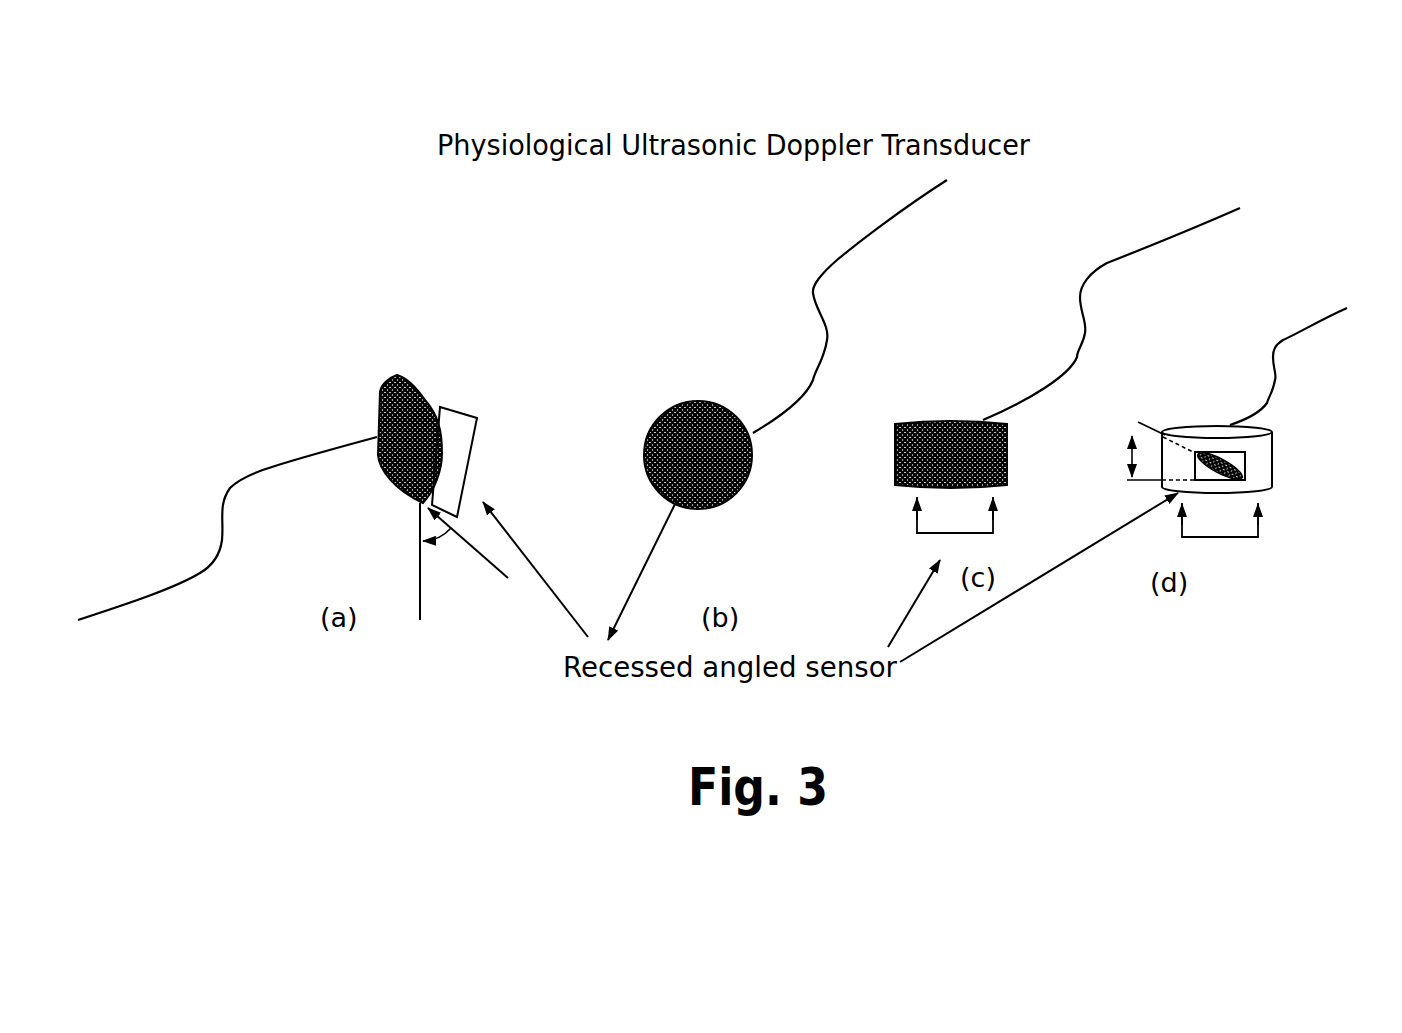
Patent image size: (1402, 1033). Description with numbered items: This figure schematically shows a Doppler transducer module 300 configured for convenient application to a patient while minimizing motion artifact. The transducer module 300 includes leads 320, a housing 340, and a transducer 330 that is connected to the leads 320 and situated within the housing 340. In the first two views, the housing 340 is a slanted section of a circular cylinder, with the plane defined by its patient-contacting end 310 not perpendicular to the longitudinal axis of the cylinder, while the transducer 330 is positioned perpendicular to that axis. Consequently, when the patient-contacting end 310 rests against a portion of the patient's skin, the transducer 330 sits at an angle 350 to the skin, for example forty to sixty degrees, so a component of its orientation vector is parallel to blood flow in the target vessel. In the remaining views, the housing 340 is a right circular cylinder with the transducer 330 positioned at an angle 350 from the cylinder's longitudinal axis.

The transducer module 300 is at (310, 403).
The patient-contacting end 310 is at (457, 407).
The leads 320 is at (280, 467).
The transducer 330 is at (728, 497).
The housing 340 is at (400, 380).
The recess angle 350 is at (447, 528).